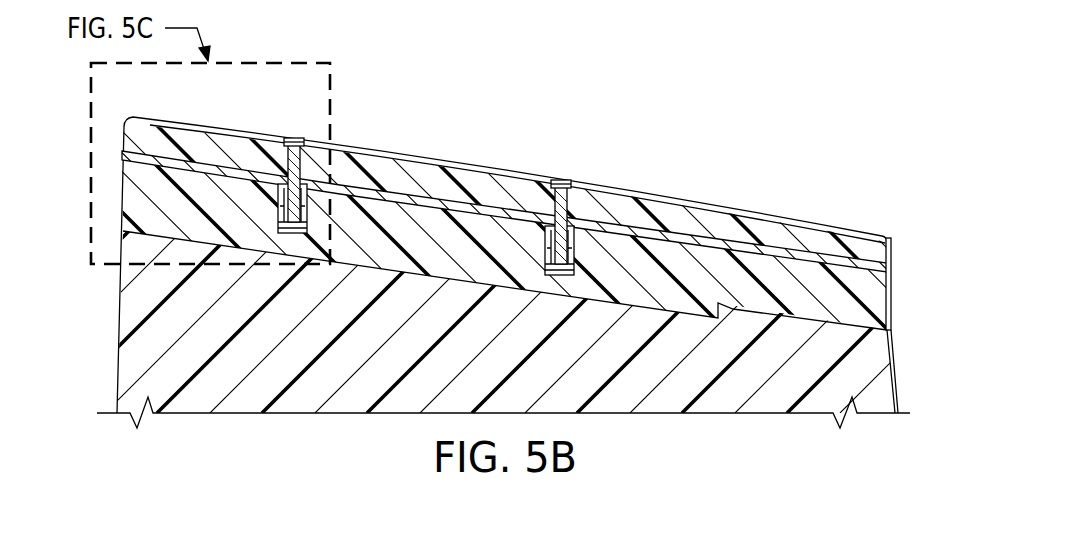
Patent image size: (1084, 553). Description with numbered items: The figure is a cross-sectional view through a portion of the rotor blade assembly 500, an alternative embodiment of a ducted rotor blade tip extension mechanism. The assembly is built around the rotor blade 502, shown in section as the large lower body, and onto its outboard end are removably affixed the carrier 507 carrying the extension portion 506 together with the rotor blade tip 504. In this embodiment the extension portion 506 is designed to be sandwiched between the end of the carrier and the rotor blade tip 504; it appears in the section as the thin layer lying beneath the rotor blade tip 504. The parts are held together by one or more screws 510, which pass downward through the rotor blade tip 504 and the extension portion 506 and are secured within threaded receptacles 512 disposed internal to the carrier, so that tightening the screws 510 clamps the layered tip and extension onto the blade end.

The rotor blade assembly 500 is at (717, 98).
The rotor blade 502 is at (126, 367).
The rotor blade tip 504 is at (810, 230).
The extension portion 506 is at (741, 243).
The carrier 507 is at (880, 302).
The screws 510 is at (294, 140).
The threaded receptacles 512 is at (279, 205).